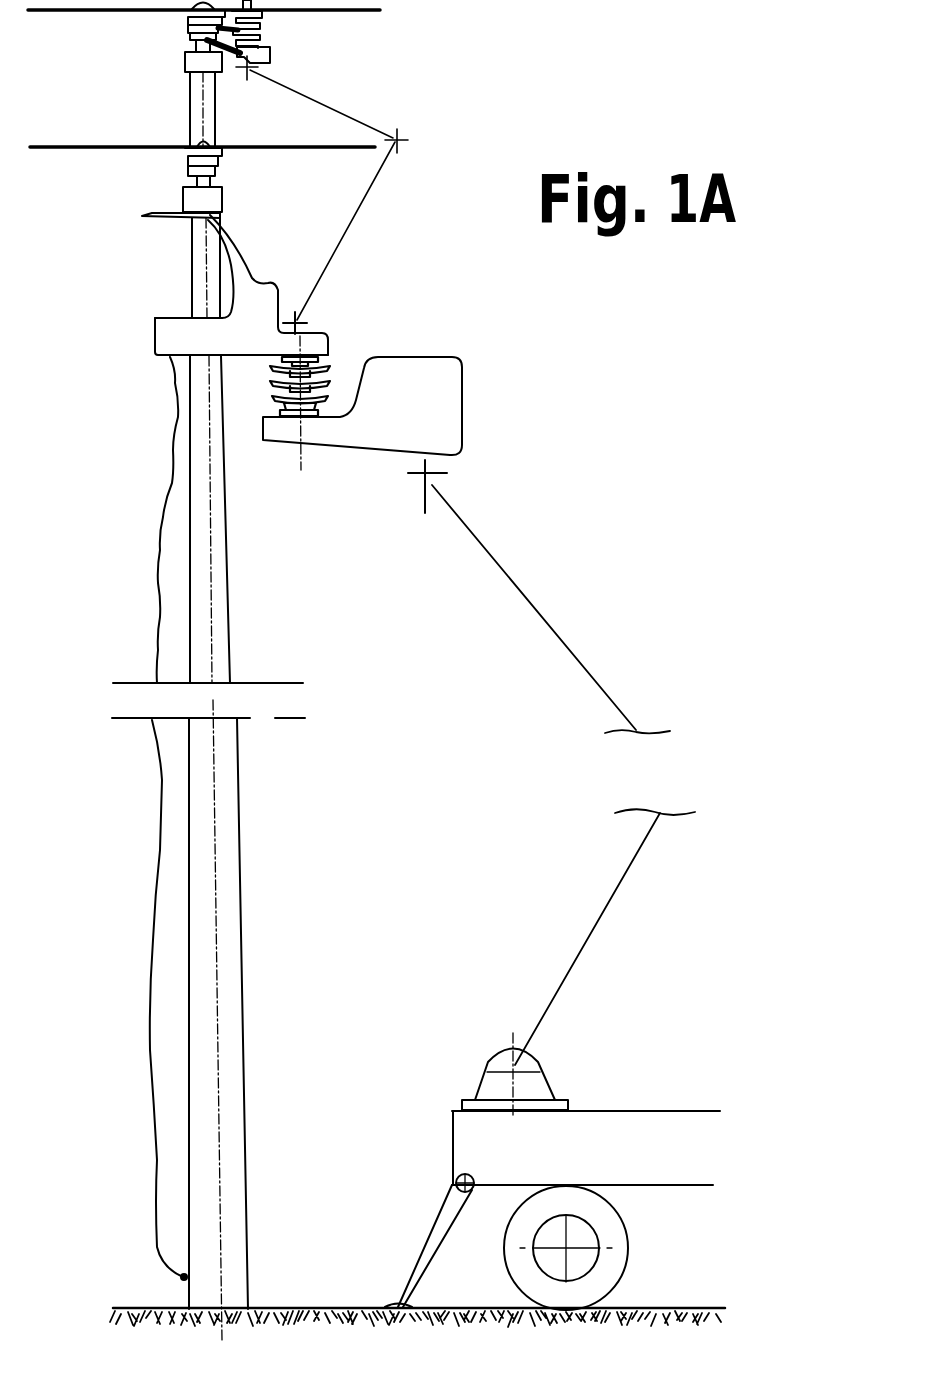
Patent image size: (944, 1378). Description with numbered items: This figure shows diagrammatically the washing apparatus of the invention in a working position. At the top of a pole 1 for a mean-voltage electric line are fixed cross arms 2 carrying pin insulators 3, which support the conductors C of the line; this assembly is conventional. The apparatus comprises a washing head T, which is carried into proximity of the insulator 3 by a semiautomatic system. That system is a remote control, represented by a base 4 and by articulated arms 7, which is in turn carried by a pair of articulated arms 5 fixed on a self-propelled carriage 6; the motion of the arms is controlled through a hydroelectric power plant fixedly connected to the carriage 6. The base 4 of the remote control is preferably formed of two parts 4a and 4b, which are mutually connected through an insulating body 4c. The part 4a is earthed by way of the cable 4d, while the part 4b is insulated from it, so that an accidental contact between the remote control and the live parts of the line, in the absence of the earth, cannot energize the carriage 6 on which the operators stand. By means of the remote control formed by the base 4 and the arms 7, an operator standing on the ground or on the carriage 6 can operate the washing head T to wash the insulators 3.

The pole 1 is at (225, 860).
The cross arms 2 is at (197, 63).
The pin insulators 3 is at (187, 30).
The base 4 is at (348, 364).
The part 4a is at (263, 305).
The part 4b is at (447, 397).
The insulating body 4c is at (278, 382).
The cable 4d is at (159, 875).
The articulated arms 5 is at (543, 620).
The self-propelled carriage 6 is at (633, 1135).
The articulated arms 7 is at (312, 104).
The washing head T is at (292, 33).
The conductors C is at (85, 12).